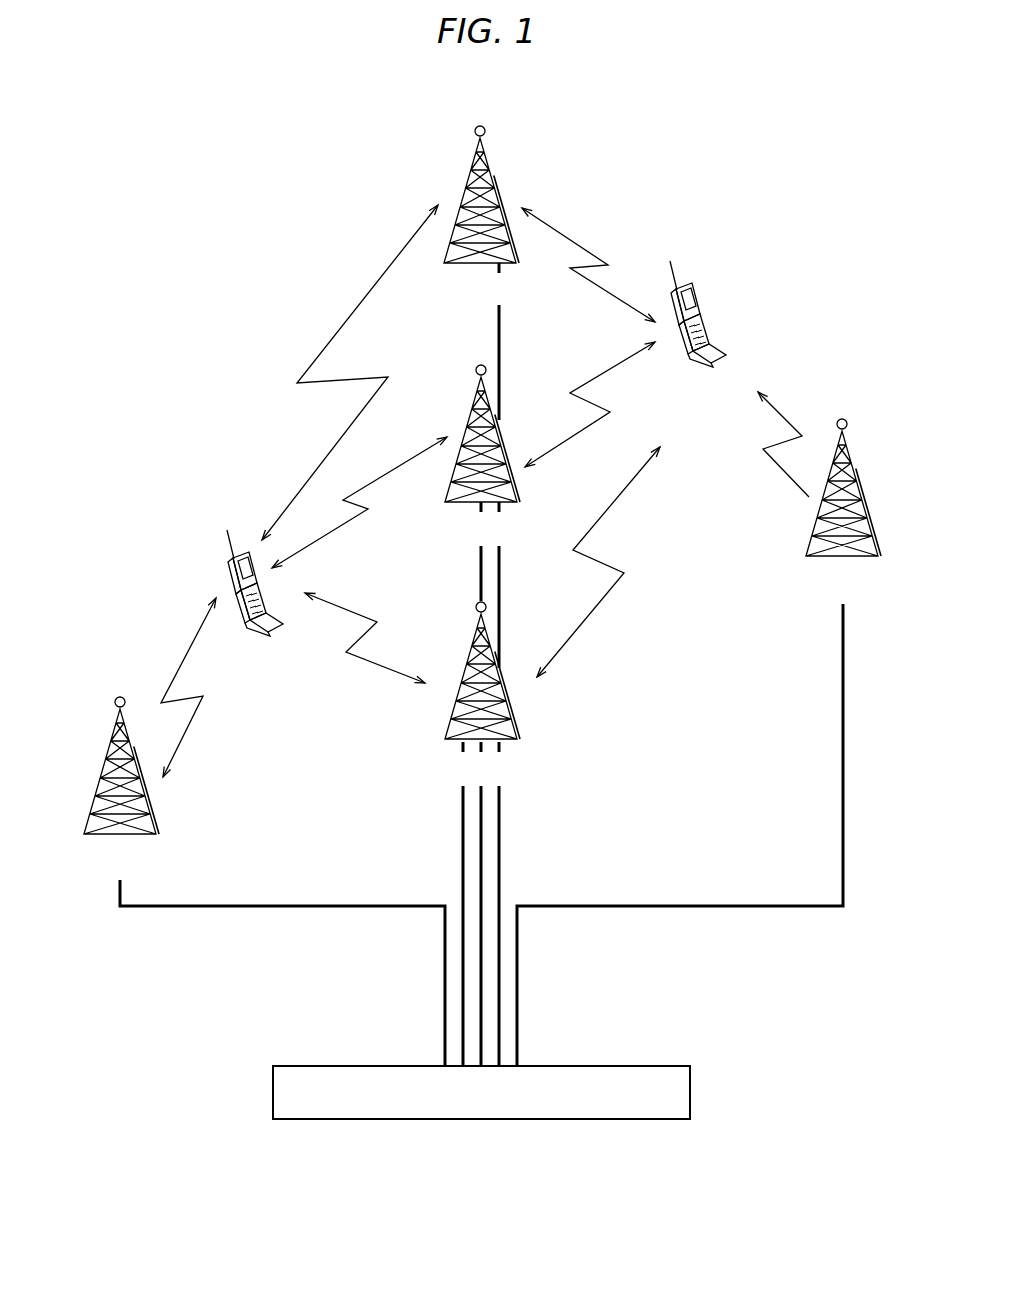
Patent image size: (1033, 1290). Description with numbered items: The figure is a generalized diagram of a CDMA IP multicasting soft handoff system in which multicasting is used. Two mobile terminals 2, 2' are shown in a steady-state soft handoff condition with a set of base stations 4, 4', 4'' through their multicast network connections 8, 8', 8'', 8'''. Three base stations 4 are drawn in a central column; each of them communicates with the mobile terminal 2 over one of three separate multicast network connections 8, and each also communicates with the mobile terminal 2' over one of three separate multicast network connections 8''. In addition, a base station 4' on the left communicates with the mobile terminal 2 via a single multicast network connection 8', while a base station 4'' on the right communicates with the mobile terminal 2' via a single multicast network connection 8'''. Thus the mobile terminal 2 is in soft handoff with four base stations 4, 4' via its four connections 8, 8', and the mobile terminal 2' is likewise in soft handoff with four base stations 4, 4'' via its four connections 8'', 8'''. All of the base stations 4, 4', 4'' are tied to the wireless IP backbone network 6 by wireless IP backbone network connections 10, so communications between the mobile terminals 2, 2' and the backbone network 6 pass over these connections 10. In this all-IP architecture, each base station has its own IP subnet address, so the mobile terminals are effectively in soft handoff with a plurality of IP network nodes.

The mobile terminal 2 is at (241, 615).
The mobile terminal 2' is at (704, 346).
The base station 4 is at (470, 443).
The base station 4' is at (180, 792).
The base station 4'' is at (801, 542).
The wireless IP backbone network 6 is at (690, 1090).
The multicast network connection 8 is at (354, 457).
The multicast network connection 8' is at (200, 687).
The multicast network connection 8'' is at (591, 439).
The multicast network connection 8''' is at (799, 436).
The wireless IP backbone network connection 10 is at (517, 966).